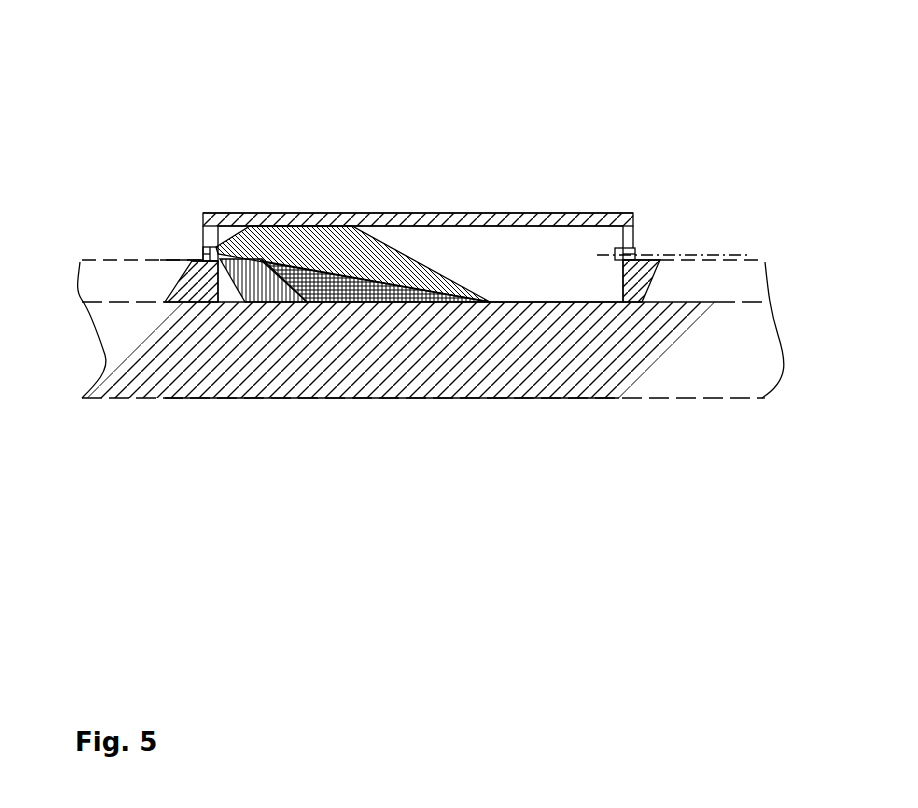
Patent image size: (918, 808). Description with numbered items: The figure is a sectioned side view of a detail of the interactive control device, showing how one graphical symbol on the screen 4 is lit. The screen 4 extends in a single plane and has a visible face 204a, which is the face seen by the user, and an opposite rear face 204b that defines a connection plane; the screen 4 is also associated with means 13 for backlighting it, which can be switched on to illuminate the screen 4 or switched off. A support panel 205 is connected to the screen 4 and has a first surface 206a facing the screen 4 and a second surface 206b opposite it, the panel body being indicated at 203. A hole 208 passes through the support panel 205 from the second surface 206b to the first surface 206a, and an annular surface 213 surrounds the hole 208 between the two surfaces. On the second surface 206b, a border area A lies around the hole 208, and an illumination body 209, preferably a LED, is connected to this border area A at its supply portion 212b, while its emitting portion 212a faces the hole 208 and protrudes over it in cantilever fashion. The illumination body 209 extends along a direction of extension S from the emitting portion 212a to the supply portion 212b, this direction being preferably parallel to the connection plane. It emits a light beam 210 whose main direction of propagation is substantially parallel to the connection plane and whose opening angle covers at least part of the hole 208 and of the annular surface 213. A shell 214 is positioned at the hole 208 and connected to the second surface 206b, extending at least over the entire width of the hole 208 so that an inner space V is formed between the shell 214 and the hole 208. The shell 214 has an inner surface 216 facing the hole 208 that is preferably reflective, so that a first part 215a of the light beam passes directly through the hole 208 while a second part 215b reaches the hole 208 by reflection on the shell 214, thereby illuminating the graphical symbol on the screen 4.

The screen 4 is at (418, 415).
The means for backlighting the screen 13 is at (196, 246).
The base body 203 is at (637, 348).
The visible face 204a is at (160, 400).
The rear face 204b is at (193, 298).
The support panel 205 is at (655, 275).
The first surface 206a is at (647, 305).
The second surface 206b is at (662, 258).
The hole 208 is at (584, 232).
The illumination body 209 is at (216, 246).
The light beam 210 is at (413, 250).
The emitting portion 212a is at (213, 243).
The supply portion 212b is at (202, 250).
The annular surface 213 is at (222, 290).
The shell 214 is at (512, 213).
The first part of the light beam 215a is at (291, 300).
The second part of the light beam 215b is at (425, 295).
The inner surface 216 is at (550, 233).
The border area A is at (173, 259).
The direction of extension S is at (750, 254).
The inner space V is at (505, 270).